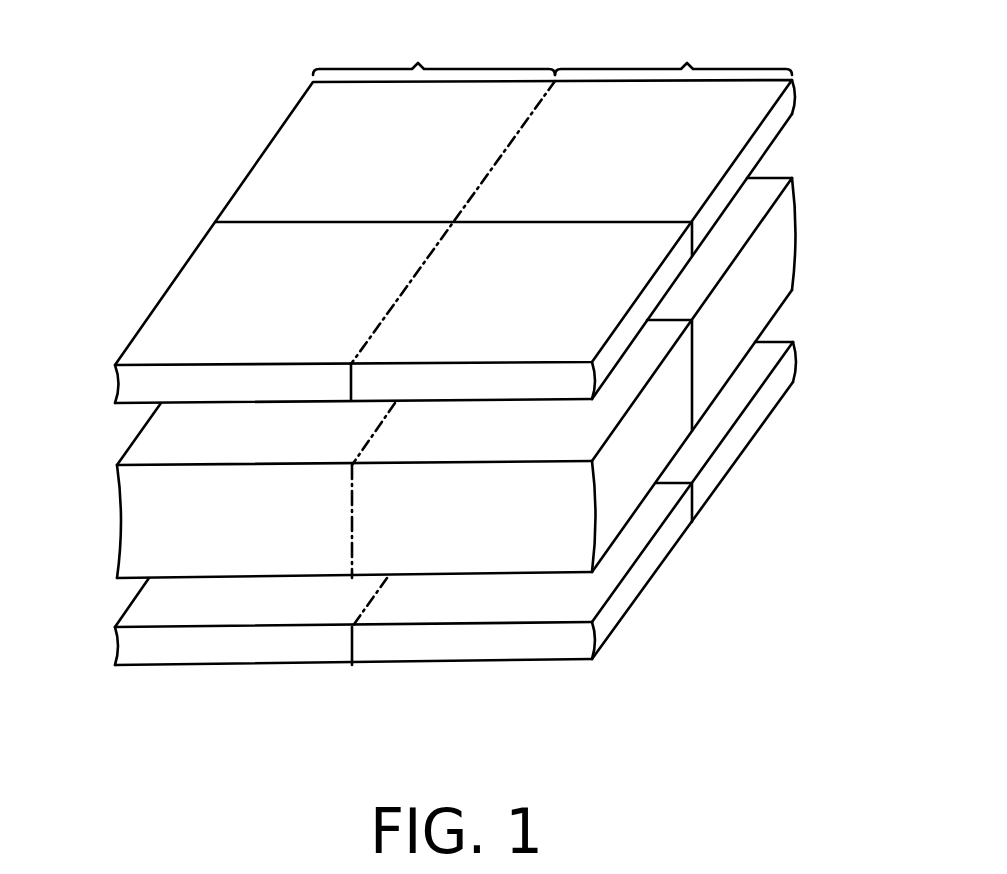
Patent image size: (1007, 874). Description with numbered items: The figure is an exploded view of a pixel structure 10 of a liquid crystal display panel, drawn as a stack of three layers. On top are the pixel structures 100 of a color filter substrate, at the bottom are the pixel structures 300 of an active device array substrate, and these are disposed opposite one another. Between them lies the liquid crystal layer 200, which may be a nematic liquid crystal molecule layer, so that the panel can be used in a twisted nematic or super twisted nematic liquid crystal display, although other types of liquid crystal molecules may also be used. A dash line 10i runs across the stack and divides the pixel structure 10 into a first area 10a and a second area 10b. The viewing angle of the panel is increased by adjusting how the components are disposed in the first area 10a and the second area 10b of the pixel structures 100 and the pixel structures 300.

The pixel structure of the liquid crystal display panel 10 is at (456, 384).
The first area 10a is at (434, 47).
The second area 10b is at (673, 46).
The dash line 10i is at (353, 667).
The pixel structures of a color filter substrate 100 is at (247, 138).
The liquid crystal layer 200 is at (137, 443).
The pixel structures of an active device array substrate 300 is at (763, 460).